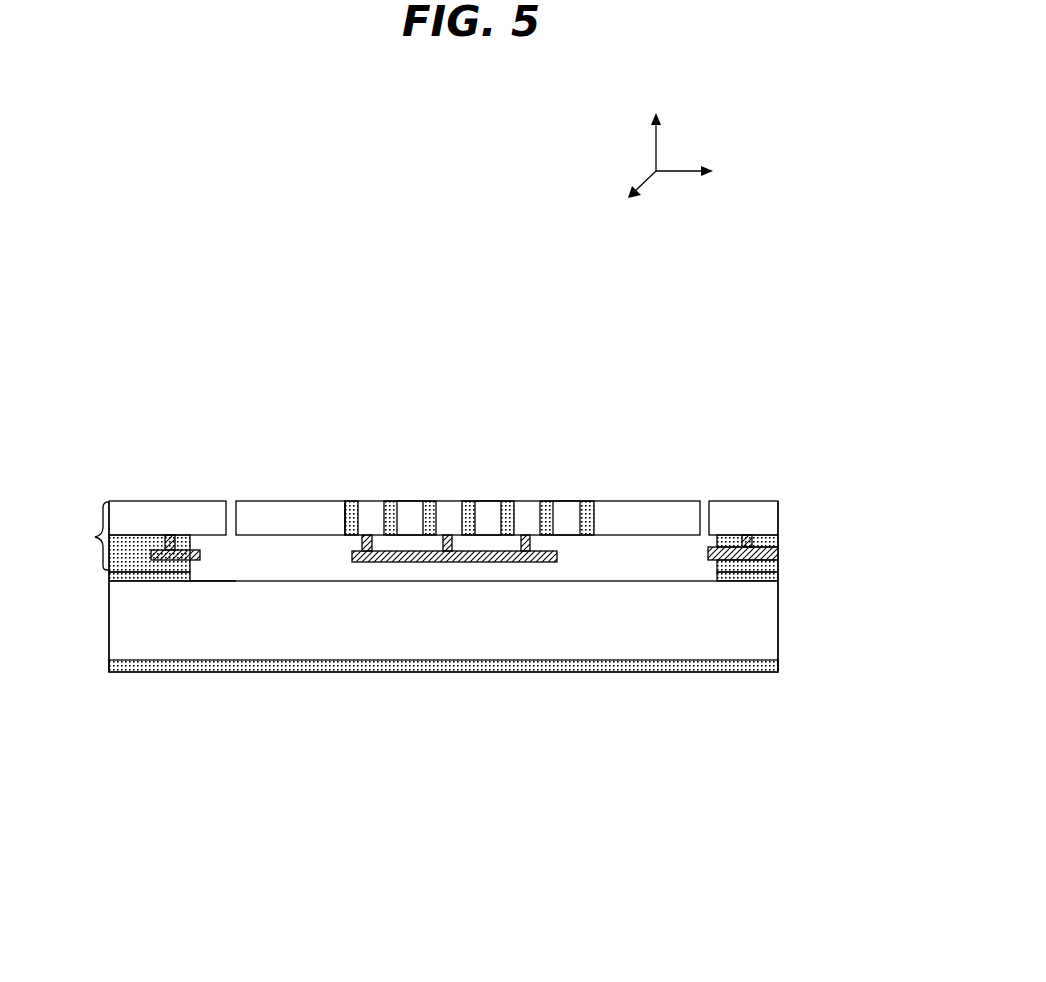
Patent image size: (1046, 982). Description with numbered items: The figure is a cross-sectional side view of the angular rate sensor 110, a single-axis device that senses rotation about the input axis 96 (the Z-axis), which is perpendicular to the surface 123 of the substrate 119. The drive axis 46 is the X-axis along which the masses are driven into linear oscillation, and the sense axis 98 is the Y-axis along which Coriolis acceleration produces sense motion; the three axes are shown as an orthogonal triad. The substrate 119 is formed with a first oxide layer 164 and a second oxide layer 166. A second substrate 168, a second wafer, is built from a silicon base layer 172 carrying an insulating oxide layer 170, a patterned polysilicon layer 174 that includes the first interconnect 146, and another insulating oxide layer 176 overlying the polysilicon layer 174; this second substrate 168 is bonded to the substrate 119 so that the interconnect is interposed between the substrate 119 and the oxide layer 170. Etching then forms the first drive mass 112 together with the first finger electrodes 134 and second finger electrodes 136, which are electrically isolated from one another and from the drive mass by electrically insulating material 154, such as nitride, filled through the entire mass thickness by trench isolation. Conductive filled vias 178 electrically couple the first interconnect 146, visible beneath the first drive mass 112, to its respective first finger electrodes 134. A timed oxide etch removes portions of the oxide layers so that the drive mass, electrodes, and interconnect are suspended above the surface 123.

The angular rate sensor 110 is at (446, 855).
The first drive mass 112 is at (260, 512).
The substrate 119 is at (125, 630).
The surface of substrate 123 is at (227, 582).
The first finger electrodes 134 is at (448, 512).
The second finger electrodes 136 is at (410, 512).
The first interconnect 146 is at (559, 558).
The electrically insulating material 154 is at (468, 512).
The first oxide layer 164 is at (788, 578).
The second oxide layer 166 is at (788, 663).
The second substrate 168 is at (95, 537).
The insulating oxide layer 170 is at (788, 543).
The silicon base layer 172 is at (788, 512).
The polysilicon layer 174 is at (788, 553).
The insulating oxide layer 176 is at (788, 566).
The conductive filled vias 178 is at (367, 542).
The drive axis 46 is at (678, 172).
The input axis 96 is at (649, 178).
The sense axis 98 is at (657, 150).